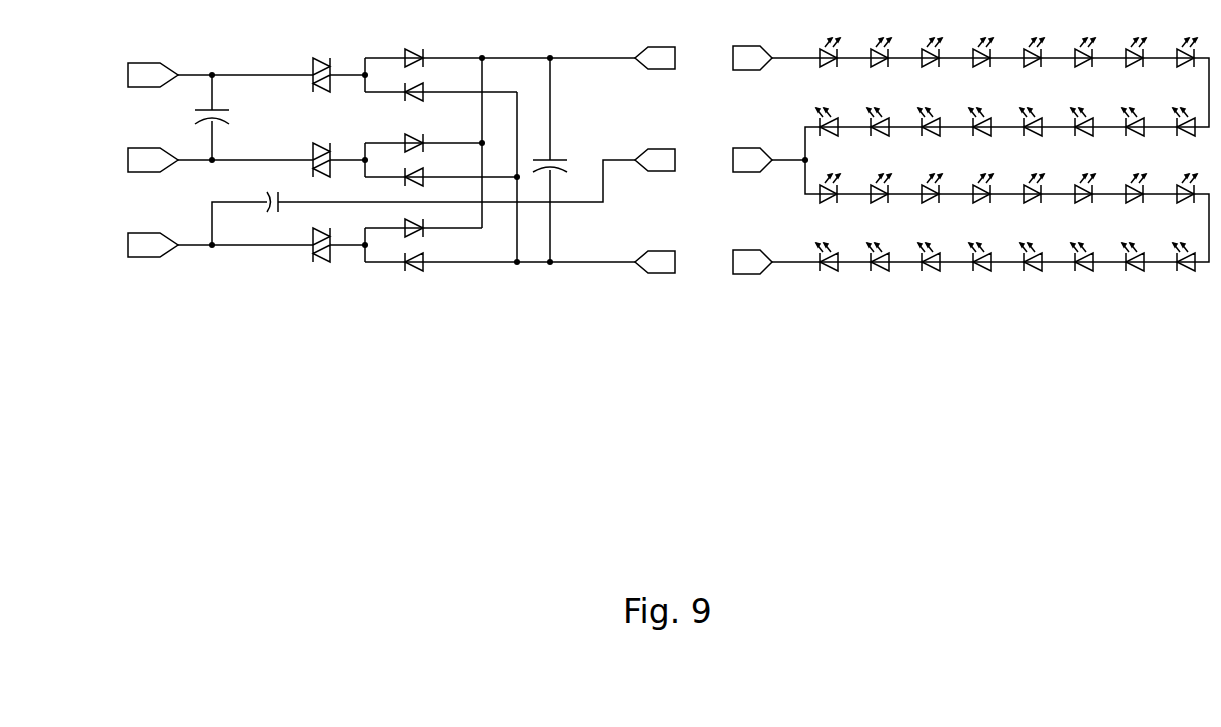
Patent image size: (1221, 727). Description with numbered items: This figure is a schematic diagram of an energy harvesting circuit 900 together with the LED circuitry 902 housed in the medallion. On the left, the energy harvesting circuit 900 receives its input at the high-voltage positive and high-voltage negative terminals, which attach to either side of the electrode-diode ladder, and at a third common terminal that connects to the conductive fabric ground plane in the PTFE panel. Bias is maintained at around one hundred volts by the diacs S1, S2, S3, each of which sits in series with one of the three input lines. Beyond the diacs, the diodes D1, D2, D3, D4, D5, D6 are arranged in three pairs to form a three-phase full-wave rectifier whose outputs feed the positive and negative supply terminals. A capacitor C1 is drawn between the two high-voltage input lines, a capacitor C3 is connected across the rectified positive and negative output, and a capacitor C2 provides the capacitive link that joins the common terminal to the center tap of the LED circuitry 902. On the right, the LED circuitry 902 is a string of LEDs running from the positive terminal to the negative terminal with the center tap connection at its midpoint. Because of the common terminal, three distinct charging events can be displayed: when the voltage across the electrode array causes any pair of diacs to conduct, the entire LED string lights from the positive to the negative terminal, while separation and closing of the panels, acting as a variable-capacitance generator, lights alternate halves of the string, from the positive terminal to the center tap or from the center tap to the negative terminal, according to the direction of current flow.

The energy harvesting circuit 900 is at (405, 204).
The LED circuitry 902 is at (730, 290).
The diac S1 is at (298, 77).
The diac S2 is at (298, 162).
The diac S3 is at (298, 247).
The diode D1 is at (426, 55).
The diode D2 is at (426, 89).
The diode D3 is at (426, 140).
The diode D4 is at (426, 174).
The diode D5 is at (426, 225).
The diode D6 is at (426, 259).
The capacitor C1 is at (239, 117).
The capacitor C2 is at (257, 201).
The capacitor C3 is at (569, 166).